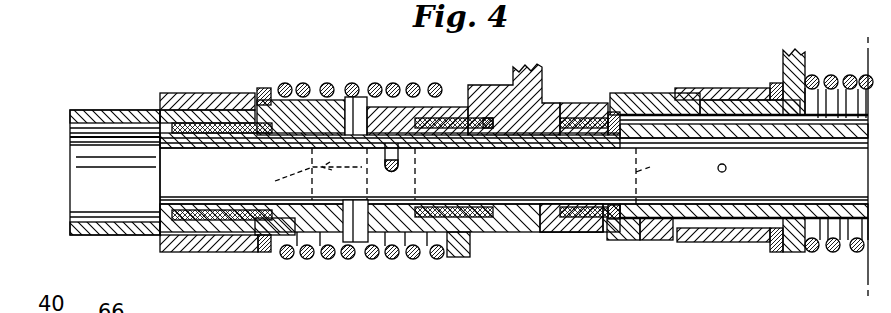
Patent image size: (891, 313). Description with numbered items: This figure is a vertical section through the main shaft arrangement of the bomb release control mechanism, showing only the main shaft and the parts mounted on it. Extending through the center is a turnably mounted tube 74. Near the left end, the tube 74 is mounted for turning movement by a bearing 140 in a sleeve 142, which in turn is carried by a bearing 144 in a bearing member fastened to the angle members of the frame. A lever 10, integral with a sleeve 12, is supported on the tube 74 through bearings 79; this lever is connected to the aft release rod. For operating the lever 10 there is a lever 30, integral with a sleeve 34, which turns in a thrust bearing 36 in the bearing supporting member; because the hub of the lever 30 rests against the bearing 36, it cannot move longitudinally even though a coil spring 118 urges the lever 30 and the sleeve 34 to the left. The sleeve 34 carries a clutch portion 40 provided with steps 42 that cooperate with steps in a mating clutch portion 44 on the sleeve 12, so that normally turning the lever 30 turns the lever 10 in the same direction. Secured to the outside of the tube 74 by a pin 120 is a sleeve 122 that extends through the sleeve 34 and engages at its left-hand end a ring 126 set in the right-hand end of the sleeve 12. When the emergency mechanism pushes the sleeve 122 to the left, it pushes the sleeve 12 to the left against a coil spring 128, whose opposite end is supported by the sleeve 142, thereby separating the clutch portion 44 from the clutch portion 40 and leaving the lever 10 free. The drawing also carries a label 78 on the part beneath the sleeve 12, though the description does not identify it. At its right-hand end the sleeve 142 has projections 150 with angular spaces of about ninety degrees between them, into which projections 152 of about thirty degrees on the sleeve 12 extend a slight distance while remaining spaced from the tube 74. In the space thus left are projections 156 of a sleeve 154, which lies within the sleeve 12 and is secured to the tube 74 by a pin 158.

The lever 10 is at (530, 72).
The sleeve 12 is at (577, 113).
The lever 30 is at (800, 70).
The sleeve 34 is at (722, 105).
The bearing 36 is at (690, 92).
The clutch portion 40 is at (647, 98).
The steps 42 is at (658, 176).
The clutch portion 44 is at (630, 240).
The tube 74 is at (487, 238).
The sleeve 78 is at (537, 236).
The bearings 79 is at (485, 118).
The coil spring 118 is at (860, 255).
The pin 120 is at (726, 170).
The sleeve 122 is at (655, 242).
The ring 126 is at (612, 228).
The coil spring 128 is at (413, 259).
The bearing 140 is at (165, 237).
The sleeve 142 is at (99, 110).
The bearing 144 is at (222, 92).
The projections 150 is at (313, 118).
The projections 152 is at (383, 110).
The sleeve 154 is at (415, 107).
The projections 156 is at (322, 174).
The pin 158 is at (402, 166).